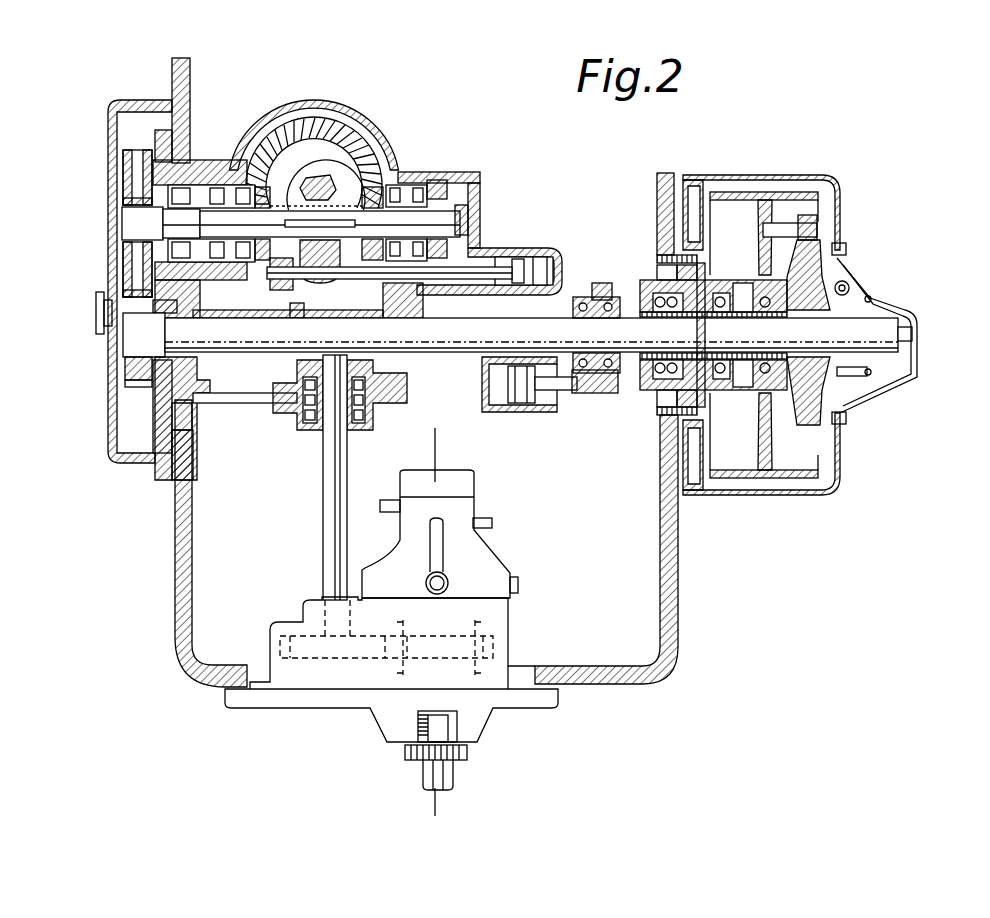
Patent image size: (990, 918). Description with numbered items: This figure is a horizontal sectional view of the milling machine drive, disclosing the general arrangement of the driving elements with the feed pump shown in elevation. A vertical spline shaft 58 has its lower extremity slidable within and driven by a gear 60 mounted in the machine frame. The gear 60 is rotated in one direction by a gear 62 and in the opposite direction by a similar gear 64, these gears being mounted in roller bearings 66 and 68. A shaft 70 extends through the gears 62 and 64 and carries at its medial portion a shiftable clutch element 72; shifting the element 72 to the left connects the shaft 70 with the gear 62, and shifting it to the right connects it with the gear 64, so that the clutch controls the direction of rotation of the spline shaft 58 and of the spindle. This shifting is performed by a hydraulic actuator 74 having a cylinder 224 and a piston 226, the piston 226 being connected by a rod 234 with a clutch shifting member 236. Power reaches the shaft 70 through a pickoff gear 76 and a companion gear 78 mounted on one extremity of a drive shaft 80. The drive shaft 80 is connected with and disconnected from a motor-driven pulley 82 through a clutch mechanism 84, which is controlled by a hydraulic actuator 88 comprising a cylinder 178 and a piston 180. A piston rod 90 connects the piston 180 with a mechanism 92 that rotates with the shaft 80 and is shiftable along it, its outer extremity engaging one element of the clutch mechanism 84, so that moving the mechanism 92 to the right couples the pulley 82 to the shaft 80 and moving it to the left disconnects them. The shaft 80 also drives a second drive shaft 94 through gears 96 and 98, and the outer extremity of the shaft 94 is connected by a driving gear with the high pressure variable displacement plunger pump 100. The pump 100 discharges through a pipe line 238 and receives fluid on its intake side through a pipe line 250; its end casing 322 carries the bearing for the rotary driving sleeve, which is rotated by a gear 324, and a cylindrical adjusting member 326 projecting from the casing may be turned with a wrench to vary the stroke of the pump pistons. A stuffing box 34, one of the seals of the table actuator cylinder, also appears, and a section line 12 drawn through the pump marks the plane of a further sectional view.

The section line 12 is at (413, 447).
The stuffing box 34 is at (463, 547).
The vertical spline shaft 58 is at (322, 178).
The gear 60 is at (330, 122).
The gear 62 is at (265, 195).
The gear 64 is at (382, 185).
The roller bearing 66 is at (218, 182).
The roller bearing 68 is at (425, 190).
The shaft 70 is at (448, 220).
The shiftable clutch element 72 is at (315, 180).
The hydraulic actuator 74 is at (556, 246).
The pickoff gear 76 is at (137, 260).
The companion gear 78 is at (137, 367).
The drive shaft 80 is at (458, 348).
The pulley 82 is at (787, 190).
The clutch mechanism 84 is at (872, 290).
The hydraulic actuator 88 is at (543, 414).
The piston rod 90 is at (588, 395).
The clutch shifting mechanism 92 is at (600, 298).
The second drive shaft 94 is at (323, 520).
The gear 96 is at (298, 308).
The gear 98 is at (297, 374).
The high pressure variable displacement plunger pump 100 is at (512, 553).
The cylinder 178 is at (548, 410).
The piston 180 is at (518, 395).
The cylinder 224 is at (560, 262).
The piston 226 is at (523, 262).
The rod 234 is at (372, 270).
The clutch shifting member 236 is at (305, 283).
The discharge pipe line 238 is at (481, 518).
The pipe line 250 is at (387, 500).
The end casing 322 is at (498, 618).
The gear 324 is at (347, 662).
The cylindrical adjusting member 326 is at (452, 772).